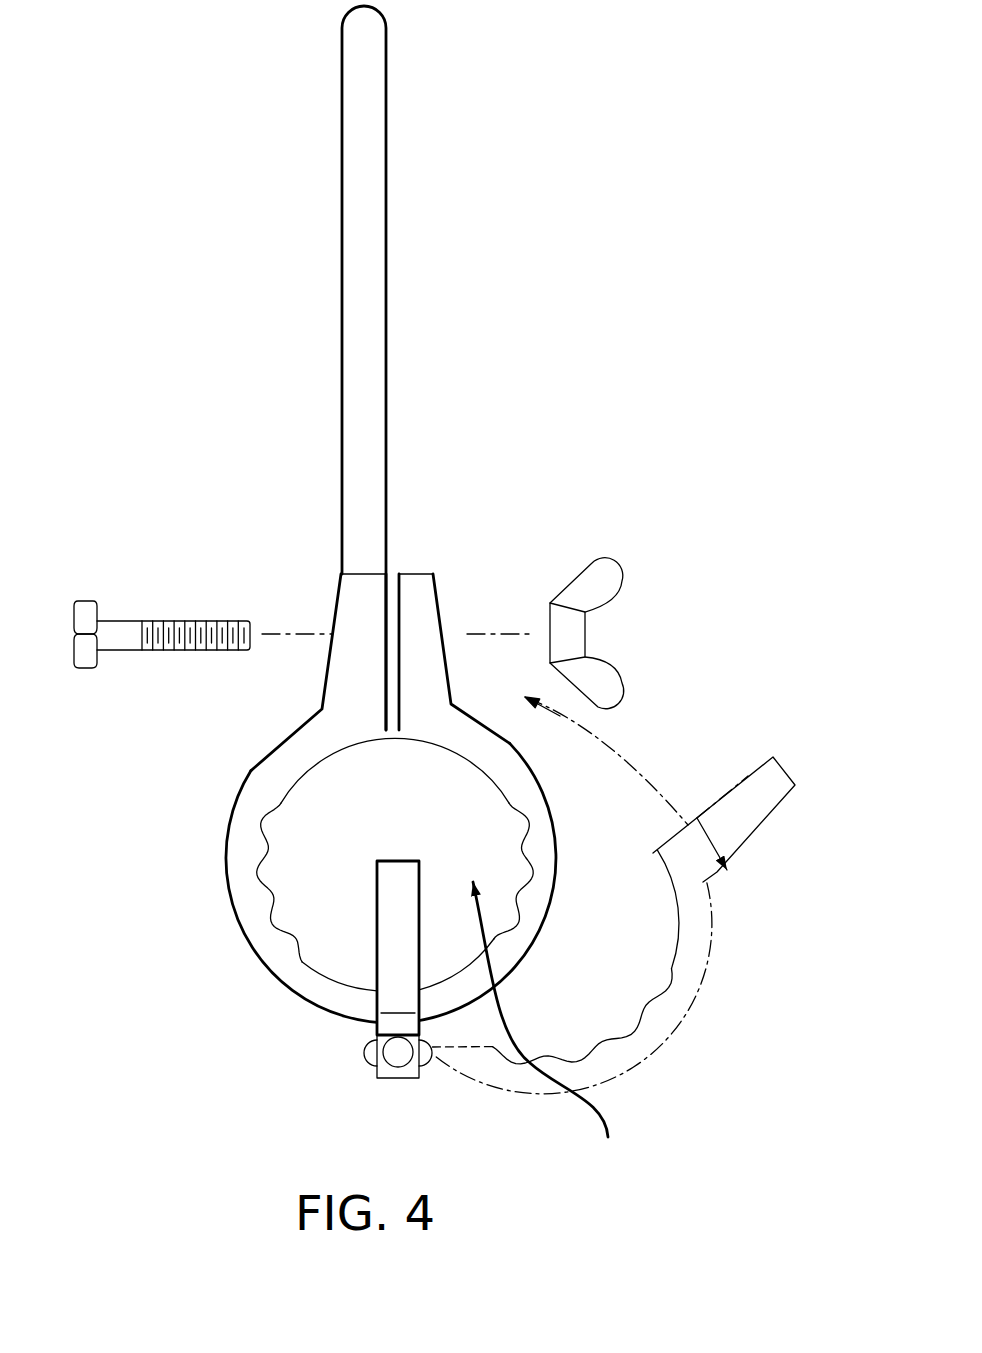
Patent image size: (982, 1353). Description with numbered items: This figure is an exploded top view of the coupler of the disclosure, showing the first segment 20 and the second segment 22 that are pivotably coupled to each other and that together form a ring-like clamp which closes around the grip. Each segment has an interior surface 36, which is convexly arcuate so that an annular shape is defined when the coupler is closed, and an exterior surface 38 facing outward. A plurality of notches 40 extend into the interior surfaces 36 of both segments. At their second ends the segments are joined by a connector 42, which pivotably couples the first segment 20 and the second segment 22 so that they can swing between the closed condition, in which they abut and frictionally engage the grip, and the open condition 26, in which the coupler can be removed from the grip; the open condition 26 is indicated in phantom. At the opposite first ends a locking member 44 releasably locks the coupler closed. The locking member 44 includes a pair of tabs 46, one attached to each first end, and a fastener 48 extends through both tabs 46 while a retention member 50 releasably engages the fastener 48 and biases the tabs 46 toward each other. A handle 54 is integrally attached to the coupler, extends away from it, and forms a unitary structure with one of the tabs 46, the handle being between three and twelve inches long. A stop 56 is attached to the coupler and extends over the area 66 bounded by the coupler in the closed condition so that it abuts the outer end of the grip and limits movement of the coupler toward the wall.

The first segment 20 is at (290, 752).
The second segment 22 is at (523, 795).
The open condition 26 is at (688, 990).
The interior surface 36 is at (312, 947).
The exterior surface 38 is at (277, 790).
The notches 40 is at (267, 910).
The connector 42 is at (402, 1082).
The locking member 44 is at (333, 617).
The tabs 46 is at (418, 600).
The fastener 48 is at (119, 638).
The retention member 50 is at (600, 587).
The handle 54 is at (365, 232).
The stop 56 is at (392, 968).
The area 66 is at (550, 1028).